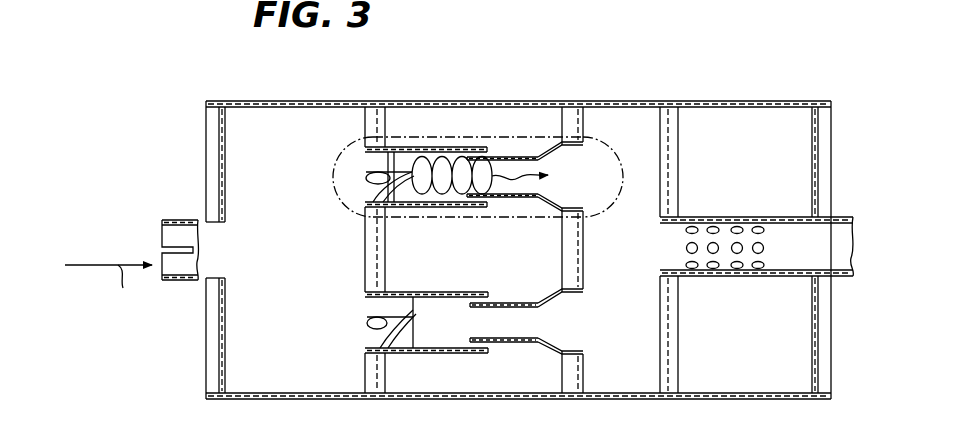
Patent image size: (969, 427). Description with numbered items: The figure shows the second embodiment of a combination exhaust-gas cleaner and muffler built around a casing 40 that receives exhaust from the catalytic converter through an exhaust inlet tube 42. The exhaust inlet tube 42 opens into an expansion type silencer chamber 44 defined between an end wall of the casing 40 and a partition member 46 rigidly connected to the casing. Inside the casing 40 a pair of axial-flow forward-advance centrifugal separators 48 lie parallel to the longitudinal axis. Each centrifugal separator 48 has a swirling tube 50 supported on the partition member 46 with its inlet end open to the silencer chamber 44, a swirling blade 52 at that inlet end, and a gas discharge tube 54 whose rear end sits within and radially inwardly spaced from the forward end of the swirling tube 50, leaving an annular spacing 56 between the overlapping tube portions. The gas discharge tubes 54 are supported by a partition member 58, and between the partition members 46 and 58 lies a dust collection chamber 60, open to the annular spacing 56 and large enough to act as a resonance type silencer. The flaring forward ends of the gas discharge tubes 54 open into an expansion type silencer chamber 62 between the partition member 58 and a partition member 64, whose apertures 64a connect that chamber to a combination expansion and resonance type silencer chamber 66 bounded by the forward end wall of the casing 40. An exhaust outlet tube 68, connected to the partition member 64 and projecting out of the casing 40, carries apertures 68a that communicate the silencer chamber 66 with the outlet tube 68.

The casing 40 is at (310, 101).
The exhaust inlet tube 42 is at (176, 220).
The expansion type silencer chamber 44 is at (287, 211).
The partition member 46 is at (365, 242).
The axial-flow forward-advance centrifugal separator 48 is at (598, 133).
The swirling tube 50 is at (452, 147).
The swirling blade 52 is at (392, 160).
The gas discharge tube 54 is at (528, 157).
The annular spacing 56 is at (492, 157).
The partition member 58 is at (578, 268).
The dust collection chamber 60 is at (497, 262).
The expansion type silencer chamber 62 is at (638, 262).
The partition member 64 is at (668, 366).
The apertures 64a is at (662, 170).
The combination expansion and resonance type silencer chamber 66 is at (754, 161).
The exhaust outlet tube 68 is at (783, 217).
The apertures 68a is at (737, 272).